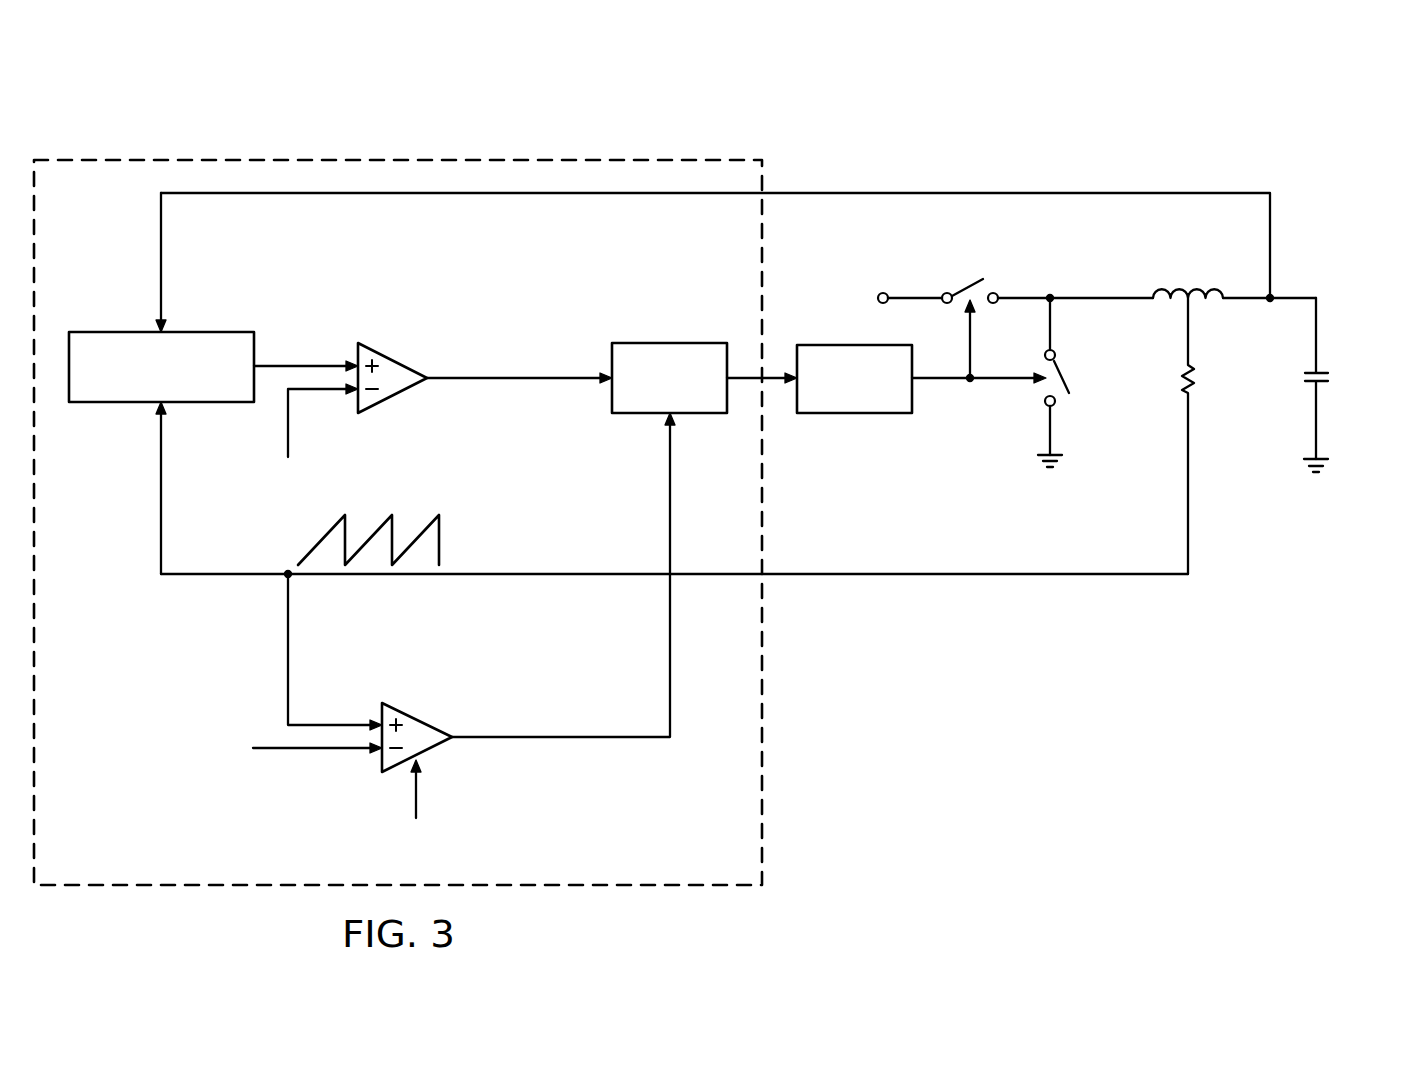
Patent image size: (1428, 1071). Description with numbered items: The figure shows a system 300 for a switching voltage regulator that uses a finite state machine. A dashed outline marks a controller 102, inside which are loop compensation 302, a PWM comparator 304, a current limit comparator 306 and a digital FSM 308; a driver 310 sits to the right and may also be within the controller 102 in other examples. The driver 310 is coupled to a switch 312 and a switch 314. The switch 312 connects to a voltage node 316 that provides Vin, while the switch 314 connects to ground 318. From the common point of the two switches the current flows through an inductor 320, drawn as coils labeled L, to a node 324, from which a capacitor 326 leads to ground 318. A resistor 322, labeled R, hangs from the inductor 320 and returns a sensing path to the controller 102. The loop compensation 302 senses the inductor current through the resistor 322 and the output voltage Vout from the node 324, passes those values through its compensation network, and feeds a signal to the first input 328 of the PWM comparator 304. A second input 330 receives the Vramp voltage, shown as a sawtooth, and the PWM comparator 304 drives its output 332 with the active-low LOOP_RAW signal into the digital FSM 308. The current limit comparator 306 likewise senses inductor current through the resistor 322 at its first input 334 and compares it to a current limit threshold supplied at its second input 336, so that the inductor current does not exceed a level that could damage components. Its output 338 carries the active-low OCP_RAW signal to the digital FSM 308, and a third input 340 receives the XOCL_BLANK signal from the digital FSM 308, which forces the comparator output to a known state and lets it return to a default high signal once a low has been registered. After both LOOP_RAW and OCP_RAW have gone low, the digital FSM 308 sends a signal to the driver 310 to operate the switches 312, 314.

The controller 102 is at (287, 150).
The system 300 is at (1070, 116).
The loop compensation 302 is at (118, 331).
The PWM comparator 304 is at (396, 358).
The current limit comparator 306 is at (420, 718).
The digital FSM 308 is at (658, 341).
The driver 310 is at (855, 414).
The switch 312 is at (957, 285).
The switch 314 is at (1059, 358).
The voltage node 316 is at (882, 292).
The ground 318 is at (1063, 460).
The inductor 320 is at (1213, 280).
The resistor 322 is at (1182, 374).
The node 324 is at (1275, 292).
The capacitor 326 is at (1334, 378).
The first input 328 is at (355, 360).
The second input 330 is at (355, 397).
The output 332 is at (433, 388).
The first input 334 is at (378, 718).
The second input 336 is at (378, 759).
The output 338 is at (455, 745).
The third input 340 is at (487, 833).